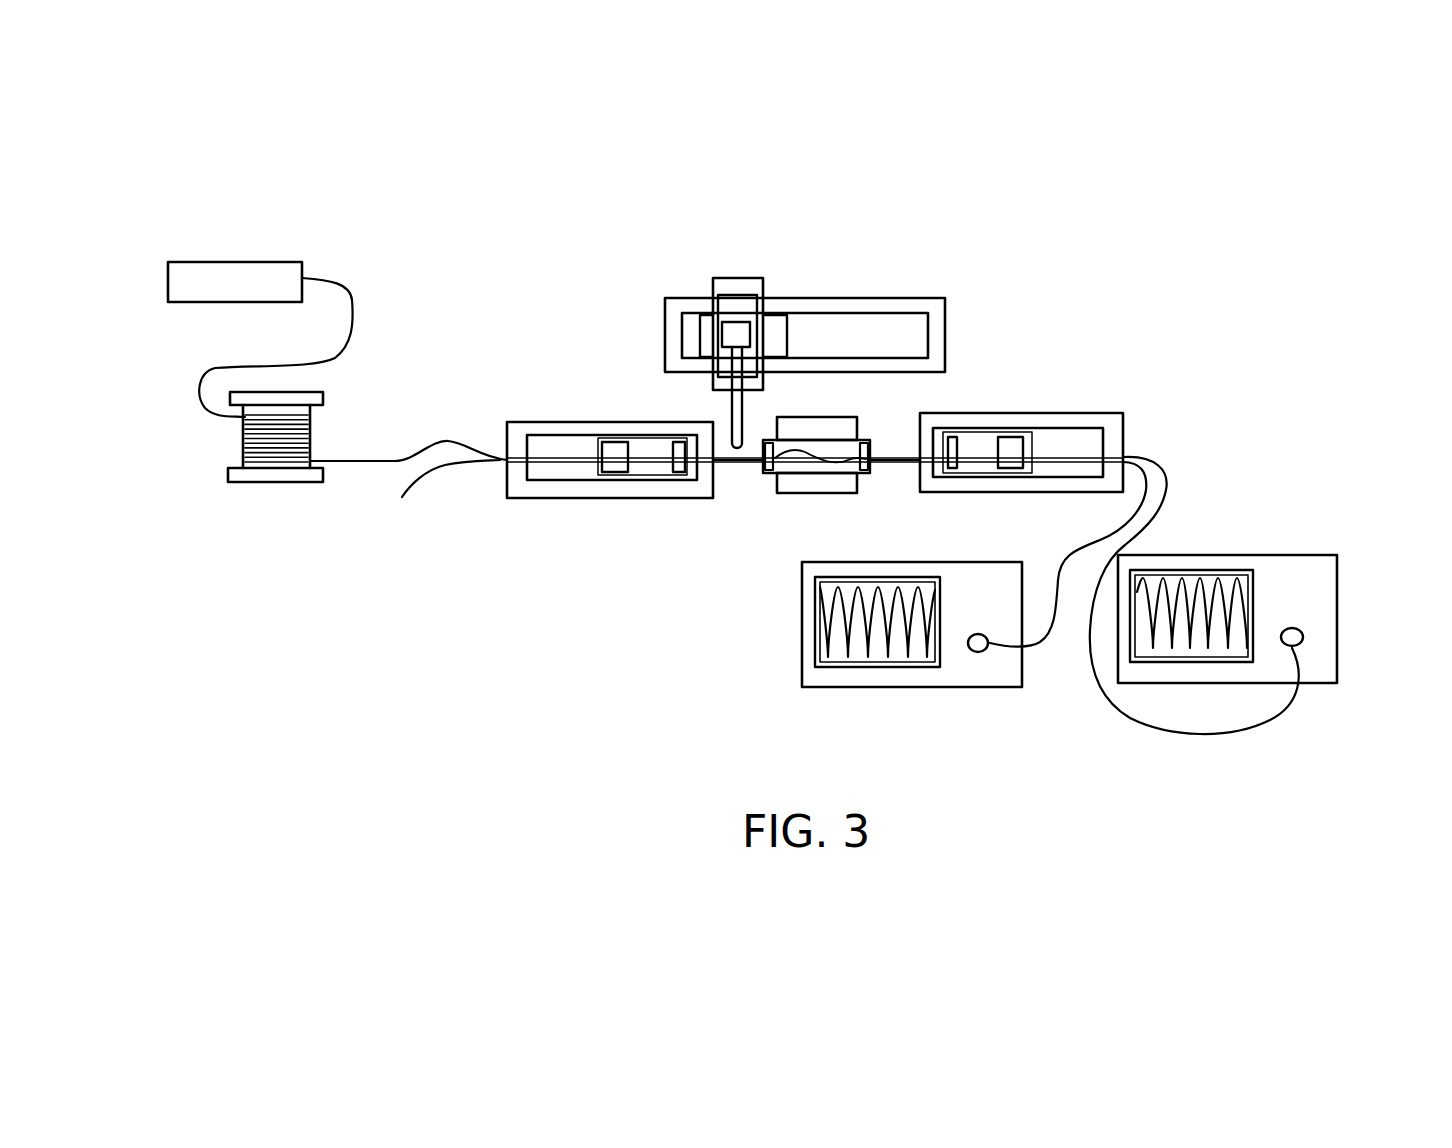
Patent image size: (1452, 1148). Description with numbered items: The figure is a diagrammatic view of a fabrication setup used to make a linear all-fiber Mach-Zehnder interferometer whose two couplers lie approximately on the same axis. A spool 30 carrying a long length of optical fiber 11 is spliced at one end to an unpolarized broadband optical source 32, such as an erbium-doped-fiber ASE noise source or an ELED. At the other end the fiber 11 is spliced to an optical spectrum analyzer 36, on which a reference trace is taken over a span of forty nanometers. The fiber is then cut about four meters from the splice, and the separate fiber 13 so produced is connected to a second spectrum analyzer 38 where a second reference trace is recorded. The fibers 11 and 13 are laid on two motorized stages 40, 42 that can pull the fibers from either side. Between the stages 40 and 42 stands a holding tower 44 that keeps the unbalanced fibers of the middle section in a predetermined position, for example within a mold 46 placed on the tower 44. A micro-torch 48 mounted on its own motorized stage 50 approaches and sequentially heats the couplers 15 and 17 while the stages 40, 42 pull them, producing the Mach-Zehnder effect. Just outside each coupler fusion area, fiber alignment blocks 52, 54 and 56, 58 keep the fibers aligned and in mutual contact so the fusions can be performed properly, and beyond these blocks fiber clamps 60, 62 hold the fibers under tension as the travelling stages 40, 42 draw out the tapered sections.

The optical fiber 11 is at (195, 391).
The separate fiber 13 is at (413, 483).
The coupler 15 is at (737, 457).
The coupler 17 is at (895, 453).
The spool 30 is at (302, 413).
The broadband optical source 32 is at (285, 268).
The optical spectrum analyzer 36 is at (1315, 600).
The second spectrum analyzer 38 is at (823, 675).
The motorized stage 40 is at (518, 432).
The motorized stage 42 is at (1097, 420).
The holding tower 44 is at (803, 487).
The mold 46 is at (858, 478).
The micro-torch 48 is at (743, 418).
The motorized stage 50 is at (827, 302).
The fiber alignment block 52 is at (767, 473).
The fiber alignment block 54 is at (684, 445).
The fiber alignment block 56 is at (857, 466).
The fiber alignment block 58 is at (950, 445).
The fiber clamp 60 is at (608, 467).
The fiber clamp 62 is at (1013, 460).